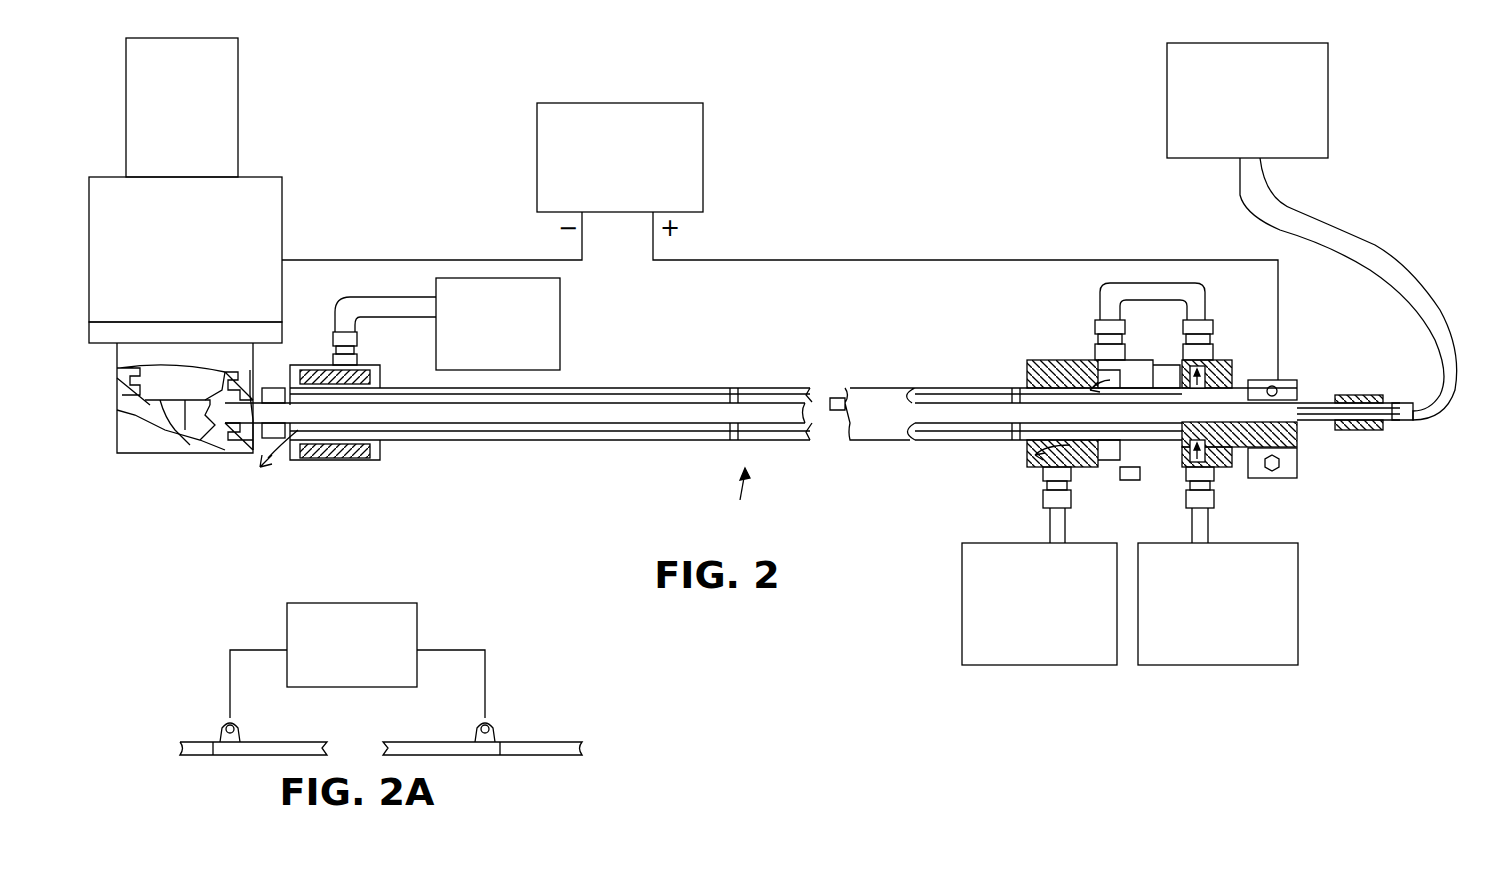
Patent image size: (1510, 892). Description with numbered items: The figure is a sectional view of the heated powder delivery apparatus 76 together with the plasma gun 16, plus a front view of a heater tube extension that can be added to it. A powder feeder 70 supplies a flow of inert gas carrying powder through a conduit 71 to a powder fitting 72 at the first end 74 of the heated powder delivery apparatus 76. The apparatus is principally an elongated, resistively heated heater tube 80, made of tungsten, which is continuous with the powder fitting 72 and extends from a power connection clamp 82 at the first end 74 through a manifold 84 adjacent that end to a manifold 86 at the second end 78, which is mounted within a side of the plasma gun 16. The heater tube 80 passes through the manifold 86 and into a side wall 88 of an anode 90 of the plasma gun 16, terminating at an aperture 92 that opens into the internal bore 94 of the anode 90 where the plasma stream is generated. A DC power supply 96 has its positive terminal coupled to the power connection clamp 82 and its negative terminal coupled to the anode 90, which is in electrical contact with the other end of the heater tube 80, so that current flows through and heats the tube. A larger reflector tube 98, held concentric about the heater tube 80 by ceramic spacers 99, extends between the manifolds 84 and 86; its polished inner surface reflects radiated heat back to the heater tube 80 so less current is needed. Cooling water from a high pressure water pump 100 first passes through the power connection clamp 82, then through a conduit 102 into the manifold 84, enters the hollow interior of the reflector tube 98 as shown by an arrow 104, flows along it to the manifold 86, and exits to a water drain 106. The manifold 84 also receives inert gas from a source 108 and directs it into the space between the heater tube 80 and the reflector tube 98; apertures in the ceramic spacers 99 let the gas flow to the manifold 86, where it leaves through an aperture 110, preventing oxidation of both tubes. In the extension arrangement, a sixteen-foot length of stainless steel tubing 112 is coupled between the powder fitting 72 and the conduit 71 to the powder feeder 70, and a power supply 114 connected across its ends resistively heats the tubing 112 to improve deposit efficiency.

In FIG. 2, the plasma gun 16 is at (282, 212).
In FIG. 2, the powder feeder 70 is at (1328, 132).
In FIG. 2, the conduit 71 is at (1420, 290).
In FIG. 2A, the conduit 71 is at (552, 755).
In FIG. 2, the powder fitting 72 is at (1402, 422).
In FIG. 2A, the powder fitting 72 is at (205, 755).
In FIG. 2, the first end 74 is at (1318, 430).
In FIG. 2, the heated powder delivery apparatus 76 is at (727, 500).
In FIG. 2, the second end 78 is at (385, 460).
In FIG. 2, the heater tube 80 is at (668, 402).
In FIG. 2, the power connection clamp 82 is at (1272, 478).
In FIG. 2, the manifold 84 is at (1032, 355).
In FIG. 2, the manifold 86 is at (335, 460).
In FIG. 2, the side wall 88 is at (255, 375).
In FIG. 2, the anode 90 is at (130, 453).
In FIG. 2, the aperture 92 is at (215, 432).
In FIG. 2, the internal bore 94 is at (178, 428).
In FIG. 2, the DC power supply 96 is at (703, 162).
In FIG. 2, the reflector tube 98 is at (530, 440).
In FIG. 2, the ceramic spacers 99 is at (740, 394).
In FIG. 2, the high pressure water pump 100 is at (1298, 628).
In FIG. 2, the conduit 102 is at (1208, 310).
In FIG. 2, the arrow 104 is at (1075, 352).
In FIG. 2, the water drain 106 is at (560, 324).
In FIG. 2, the source of inert gas 108 is at (962, 627).
In FIG. 2, the aperture 110 is at (270, 466).
In FIG. 2A, the stainless steel tubing 112 is at (395, 742).
In FIG. 2A, the power supply 114 is at (417, 632).